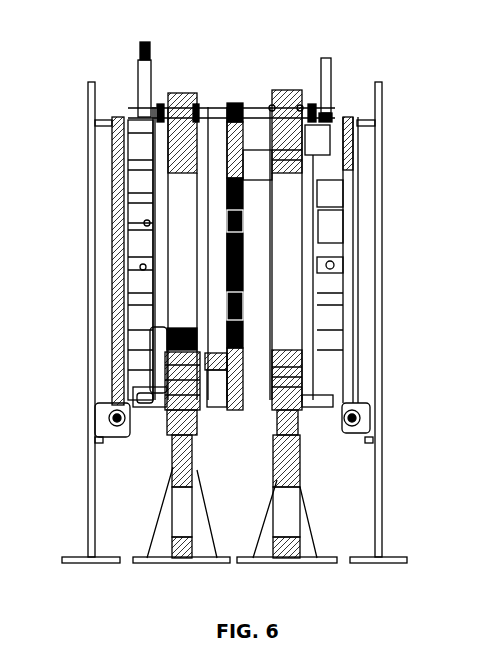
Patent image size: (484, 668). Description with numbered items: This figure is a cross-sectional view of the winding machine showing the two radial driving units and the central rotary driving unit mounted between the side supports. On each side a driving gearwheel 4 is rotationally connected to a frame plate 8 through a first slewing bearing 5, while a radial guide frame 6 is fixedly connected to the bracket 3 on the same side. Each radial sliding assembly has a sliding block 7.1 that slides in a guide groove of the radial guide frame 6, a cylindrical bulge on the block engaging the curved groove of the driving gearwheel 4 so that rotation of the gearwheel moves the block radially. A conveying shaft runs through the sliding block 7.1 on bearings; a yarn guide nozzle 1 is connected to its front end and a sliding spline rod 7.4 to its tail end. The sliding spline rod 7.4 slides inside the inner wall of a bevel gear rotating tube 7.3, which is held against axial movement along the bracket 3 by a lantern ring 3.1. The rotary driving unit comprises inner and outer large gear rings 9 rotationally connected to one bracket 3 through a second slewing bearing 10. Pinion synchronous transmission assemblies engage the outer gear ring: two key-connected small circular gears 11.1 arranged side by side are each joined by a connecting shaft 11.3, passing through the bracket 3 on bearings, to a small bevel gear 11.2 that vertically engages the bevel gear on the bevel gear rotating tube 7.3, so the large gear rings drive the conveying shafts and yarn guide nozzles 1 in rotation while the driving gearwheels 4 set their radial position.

The yarn guide nozzle 1 is at (118, 235).
The bracket 3 is at (178, 450).
The lantern ring 3.1 is at (126, 125).
The driving gearwheel 4 is at (125, 122).
The first slewing bearing 5 is at (380, 318).
The radial guide frame 6 is at (335, 147).
The sliding block 7.1 is at (130, 193).
The bevel gear rotating tube 7.3 is at (147, 98).
The sliding spline rod 7.4 is at (148, 47).
The frame plate 8 is at (93, 470).
The inner and outer large gear rings 9 is at (233, 388).
The second slewing bearing 10 is at (243, 410).
The small circular gear 11.1 is at (236, 106).
The small bevel gear 11.2 is at (320, 113).
The connecting shaft 11.3 is at (257, 110).